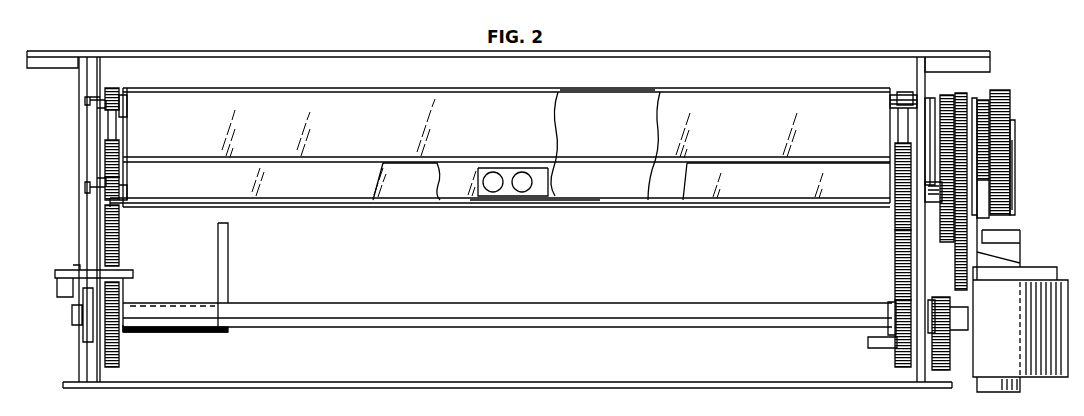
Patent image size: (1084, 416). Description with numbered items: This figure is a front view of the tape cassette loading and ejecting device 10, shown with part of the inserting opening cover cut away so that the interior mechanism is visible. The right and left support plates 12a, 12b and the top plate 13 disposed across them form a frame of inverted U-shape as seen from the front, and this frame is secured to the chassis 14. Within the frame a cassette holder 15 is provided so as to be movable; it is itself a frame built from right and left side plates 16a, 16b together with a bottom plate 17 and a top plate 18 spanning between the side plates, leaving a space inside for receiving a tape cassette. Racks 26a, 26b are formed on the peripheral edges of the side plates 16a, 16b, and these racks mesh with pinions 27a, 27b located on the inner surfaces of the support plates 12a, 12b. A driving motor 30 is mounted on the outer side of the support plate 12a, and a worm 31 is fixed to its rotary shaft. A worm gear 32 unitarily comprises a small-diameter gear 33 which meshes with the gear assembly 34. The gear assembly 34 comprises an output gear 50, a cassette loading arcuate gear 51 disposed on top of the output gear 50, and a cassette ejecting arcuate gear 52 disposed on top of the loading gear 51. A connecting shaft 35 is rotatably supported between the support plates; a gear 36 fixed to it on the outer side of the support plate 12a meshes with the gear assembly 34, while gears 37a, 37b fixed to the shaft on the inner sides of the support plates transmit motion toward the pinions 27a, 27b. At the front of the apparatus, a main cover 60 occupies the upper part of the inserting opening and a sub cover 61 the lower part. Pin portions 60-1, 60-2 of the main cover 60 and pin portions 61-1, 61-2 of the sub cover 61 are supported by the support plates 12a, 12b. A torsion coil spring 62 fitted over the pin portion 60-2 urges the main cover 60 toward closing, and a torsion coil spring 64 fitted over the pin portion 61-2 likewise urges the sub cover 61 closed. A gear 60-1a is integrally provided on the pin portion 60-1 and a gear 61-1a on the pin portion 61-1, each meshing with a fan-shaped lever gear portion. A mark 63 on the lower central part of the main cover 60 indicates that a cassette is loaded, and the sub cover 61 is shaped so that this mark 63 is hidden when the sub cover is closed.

The tape cassette loading and ejecting device 10 is at (643, 43).
The right support plate 12a is at (913, 374).
The left support plate 12b is at (97, 372).
The top plate 13 is at (703, 52).
The chassis 14 is at (645, 388).
The cassette holder 15 is at (615, 89).
The right side plate 16a is at (905, 92).
The left side plate 16b is at (113, 88).
The bottom plate 17 is at (560, 208).
The top plate 18 is at (596, 89).
The right rack 26a is at (895, 222).
The left rack 26b is at (114, 134).
The right pinion 27a is at (895, 268).
The left pinion 27b is at (120, 261).
The driving motor 30 is at (1028, 374).
The worm 31 is at (1013, 168).
The worm gear 32 is at (1011, 122).
The small-diameter gear 33 is at (990, 126).
The gear assembly 34 is at (986, 93).
The connecting shaft 35 is at (704, 330).
The gear 36 is at (950, 343).
The right gear 37a is at (896, 362).
The left gear 37b is at (118, 347).
The output gear 50 is at (962, 92).
The cassette loading arcuate gear 51 is at (960, 92).
The cassette ejecting arcuate gear 52 is at (976, 97).
The main cover 60 is at (556, 124).
The pin portion 60-1 is at (902, 100).
The gear 60-1a is at (930, 118).
The pin portion 60-2 is at (88, 100).
The sub cover 61 is at (405, 192).
The pin portion 61-1 is at (892, 190).
The gear 61-1a is at (926, 178).
The pin portion 61-2 is at (88, 188).
The torsion coil spring 62 is at (124, 100).
The mark 63 is at (505, 195).
The torsion coil spring 64 is at (122, 193).